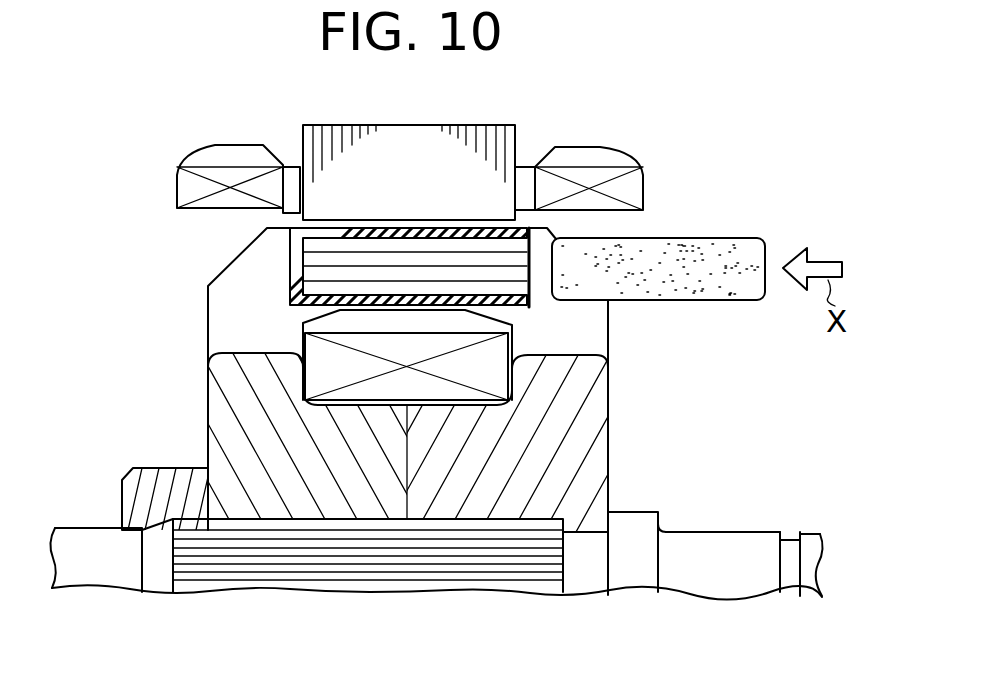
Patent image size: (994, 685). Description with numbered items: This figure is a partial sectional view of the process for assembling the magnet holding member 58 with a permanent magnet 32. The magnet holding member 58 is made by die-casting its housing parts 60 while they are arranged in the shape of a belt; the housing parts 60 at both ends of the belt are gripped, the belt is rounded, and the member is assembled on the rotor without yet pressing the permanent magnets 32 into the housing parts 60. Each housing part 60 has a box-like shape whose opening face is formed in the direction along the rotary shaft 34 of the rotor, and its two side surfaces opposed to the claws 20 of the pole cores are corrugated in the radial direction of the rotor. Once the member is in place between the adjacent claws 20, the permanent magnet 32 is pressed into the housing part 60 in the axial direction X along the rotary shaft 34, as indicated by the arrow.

The claw 20 is at (492, 362).
The permanent magnet 32 is at (695, 252).
The rotary shaft 34 is at (725, 548).
The magnet holding member 58 is at (286, 258).
The housing part 60 is at (290, 293).